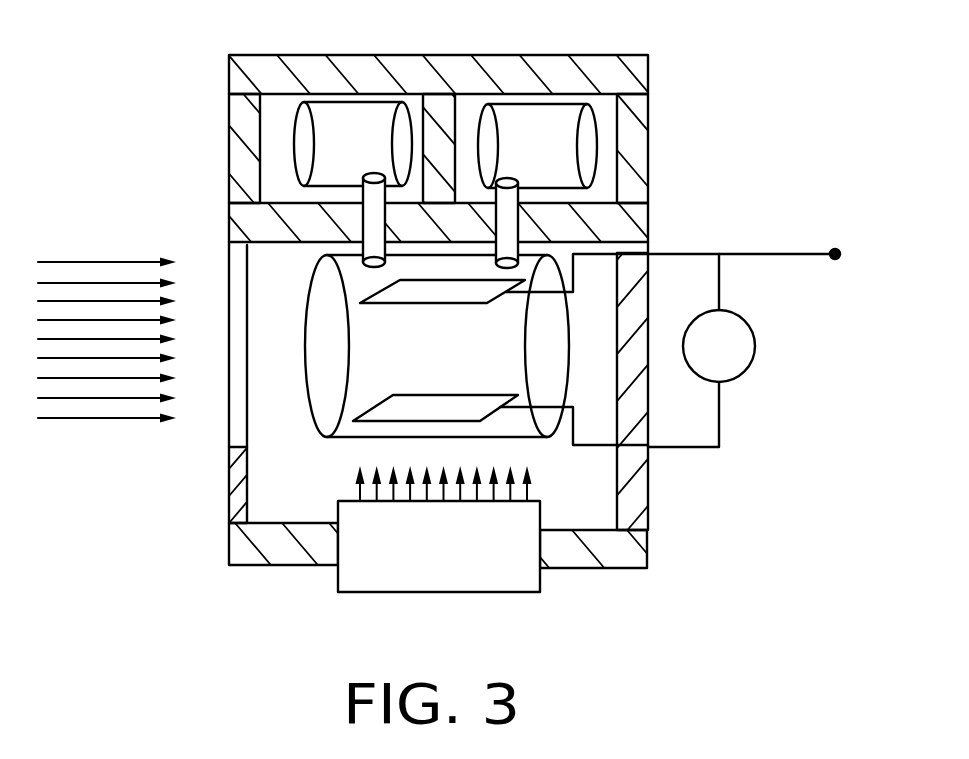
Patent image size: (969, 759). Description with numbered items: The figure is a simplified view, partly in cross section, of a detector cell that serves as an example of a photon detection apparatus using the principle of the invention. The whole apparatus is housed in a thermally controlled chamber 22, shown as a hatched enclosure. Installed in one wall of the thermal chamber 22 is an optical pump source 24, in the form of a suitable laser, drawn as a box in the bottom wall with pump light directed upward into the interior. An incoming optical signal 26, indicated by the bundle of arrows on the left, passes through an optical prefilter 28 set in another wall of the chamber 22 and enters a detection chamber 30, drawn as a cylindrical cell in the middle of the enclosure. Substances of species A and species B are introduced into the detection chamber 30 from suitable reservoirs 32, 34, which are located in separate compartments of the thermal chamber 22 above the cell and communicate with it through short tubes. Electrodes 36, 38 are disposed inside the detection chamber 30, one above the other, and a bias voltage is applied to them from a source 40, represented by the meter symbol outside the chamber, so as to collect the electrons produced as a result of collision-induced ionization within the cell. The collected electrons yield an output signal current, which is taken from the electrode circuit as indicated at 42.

The thermally controlled chamber 22 is at (647, 553).
The optical pump source 24 is at (478, 594).
The incoming optical signal 26 is at (107, 298).
The optical prefilter 28 is at (229, 390).
The detection chamber 30 is at (598, 333).
The species A reservoir 32 is at (325, 146).
The species B reservoir 34 is at (567, 148).
The electrode 36 is at (372, 304).
The electrode 38 is at (372, 408).
The bias voltage source 40 is at (745, 312).
The output signal current 42 is at (840, 258).